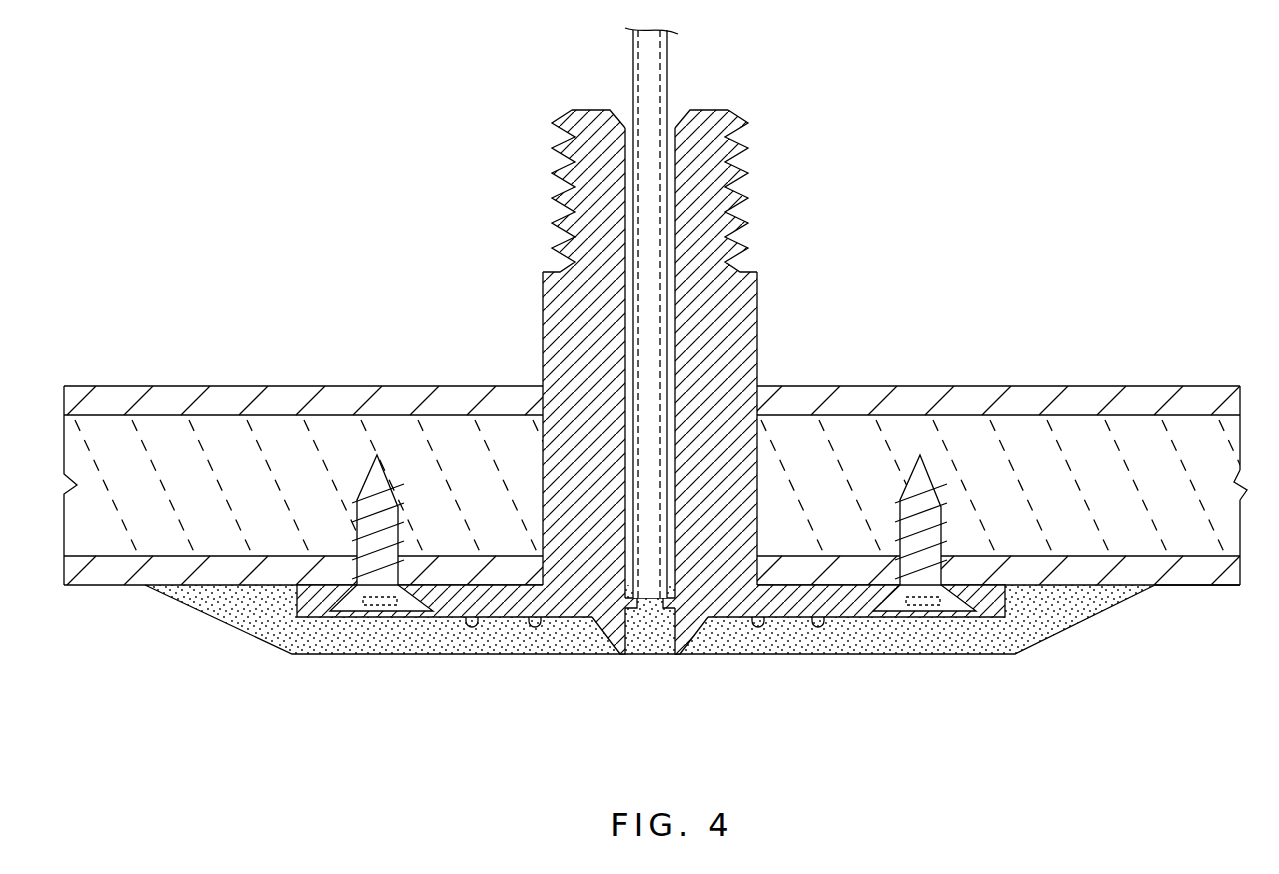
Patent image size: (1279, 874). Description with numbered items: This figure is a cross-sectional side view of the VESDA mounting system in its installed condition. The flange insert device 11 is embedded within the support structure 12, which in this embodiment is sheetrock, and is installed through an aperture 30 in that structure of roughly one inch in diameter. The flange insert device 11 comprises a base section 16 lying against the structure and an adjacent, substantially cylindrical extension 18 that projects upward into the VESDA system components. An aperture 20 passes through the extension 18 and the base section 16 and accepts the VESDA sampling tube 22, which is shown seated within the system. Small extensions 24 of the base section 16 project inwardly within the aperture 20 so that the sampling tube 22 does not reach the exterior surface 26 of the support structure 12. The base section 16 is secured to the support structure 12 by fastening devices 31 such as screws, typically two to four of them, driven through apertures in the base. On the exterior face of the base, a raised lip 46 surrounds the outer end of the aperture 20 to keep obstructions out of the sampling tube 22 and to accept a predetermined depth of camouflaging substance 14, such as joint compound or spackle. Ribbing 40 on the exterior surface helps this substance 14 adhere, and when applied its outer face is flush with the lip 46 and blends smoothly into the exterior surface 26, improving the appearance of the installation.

The flange insert device 11 is at (651, 432).
The support structure 12 is at (1065, 423).
The camouflaging substance 14 is at (347, 647).
The base section 16 is at (838, 595).
The extension 18 is at (552, 332).
The aperture 20 is at (668, 203).
The sampling tube 22 is at (655, 73).
The extensions 24 is at (668, 608).
The exterior surface 26 is at (1200, 585).
The aperture 30 is at (757, 502).
The fastening devices 31 is at (357, 512).
The ribbing 40 is at (477, 624).
The lip 46 is at (605, 630).